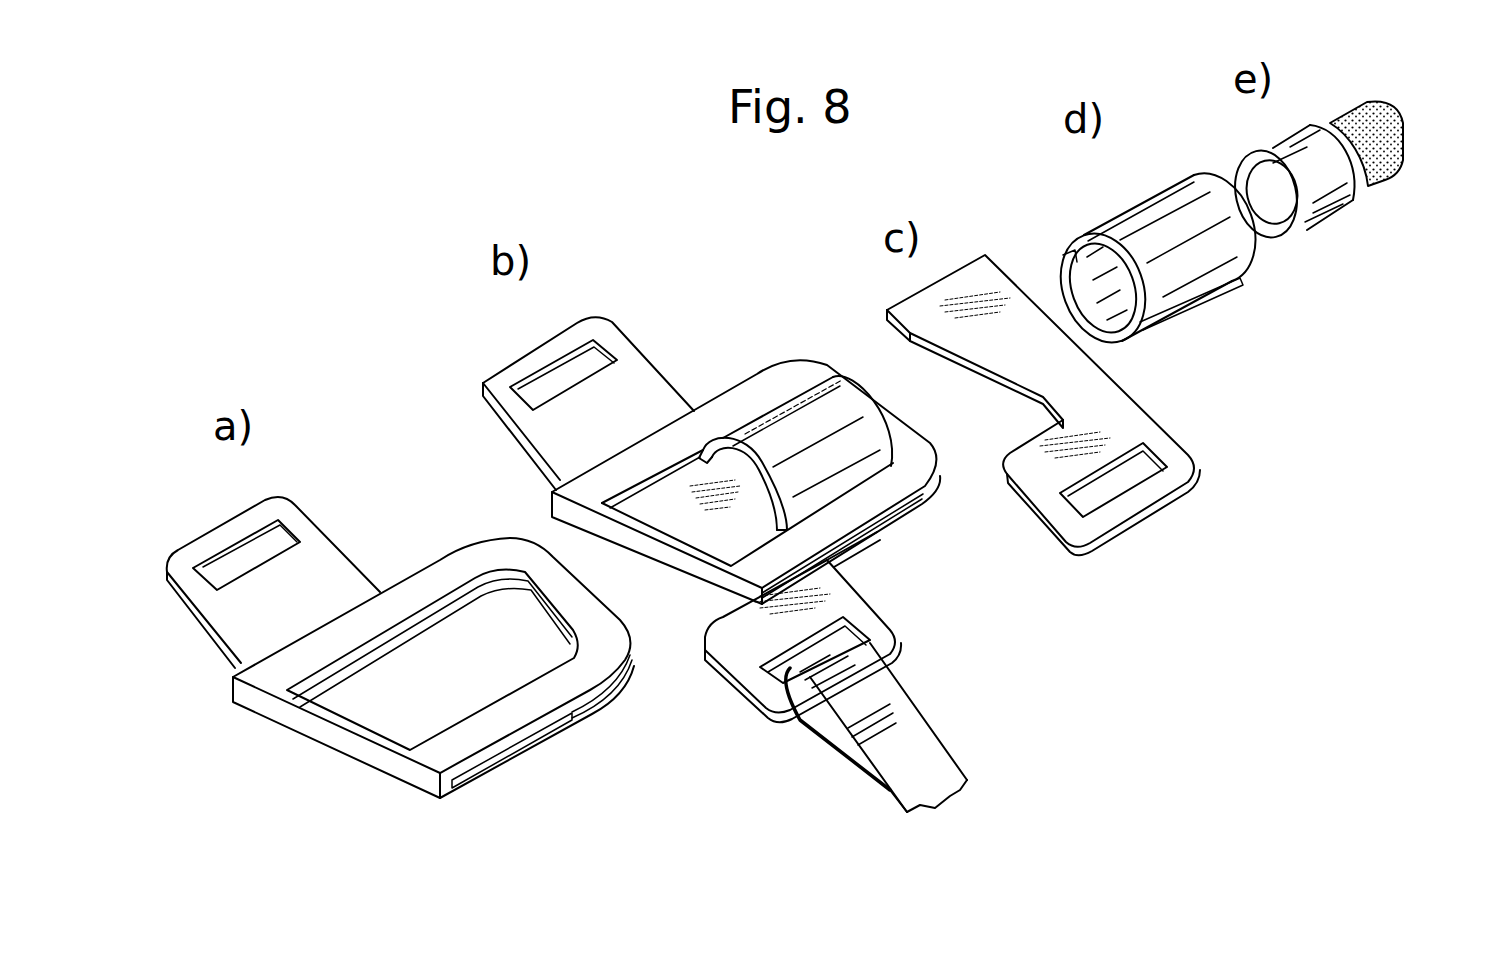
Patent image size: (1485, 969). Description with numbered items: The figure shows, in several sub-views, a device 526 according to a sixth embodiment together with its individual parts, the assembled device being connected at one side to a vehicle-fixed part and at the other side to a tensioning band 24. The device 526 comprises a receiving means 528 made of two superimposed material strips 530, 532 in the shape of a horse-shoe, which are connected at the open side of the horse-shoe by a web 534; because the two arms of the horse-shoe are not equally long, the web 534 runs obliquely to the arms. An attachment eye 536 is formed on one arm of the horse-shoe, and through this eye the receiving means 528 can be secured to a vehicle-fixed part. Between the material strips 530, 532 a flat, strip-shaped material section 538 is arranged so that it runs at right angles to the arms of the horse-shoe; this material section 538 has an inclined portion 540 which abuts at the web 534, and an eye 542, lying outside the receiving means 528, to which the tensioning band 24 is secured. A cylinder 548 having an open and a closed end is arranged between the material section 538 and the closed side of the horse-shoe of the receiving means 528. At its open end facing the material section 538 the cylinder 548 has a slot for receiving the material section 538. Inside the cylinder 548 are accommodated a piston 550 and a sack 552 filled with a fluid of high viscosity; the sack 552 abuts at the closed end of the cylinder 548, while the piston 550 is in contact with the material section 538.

The tensioning band 24 is at (937, 773).
The device 526 is at (941, 562).
The receiving means 528 is at (395, 546).
The material strip 530 is at (543, 703).
The material strip 532 is at (523, 750).
The web 534 is at (325, 730).
The attachment eye 536 is at (203, 538).
The material section 538 is at (690, 473).
The inclined portion 540 is at (997, 380).
The eye 542 is at (1107, 513).
The cylinder 548 is at (813, 400).
The piston 550 is at (1330, 200).
The sack 552 is at (1387, 160).